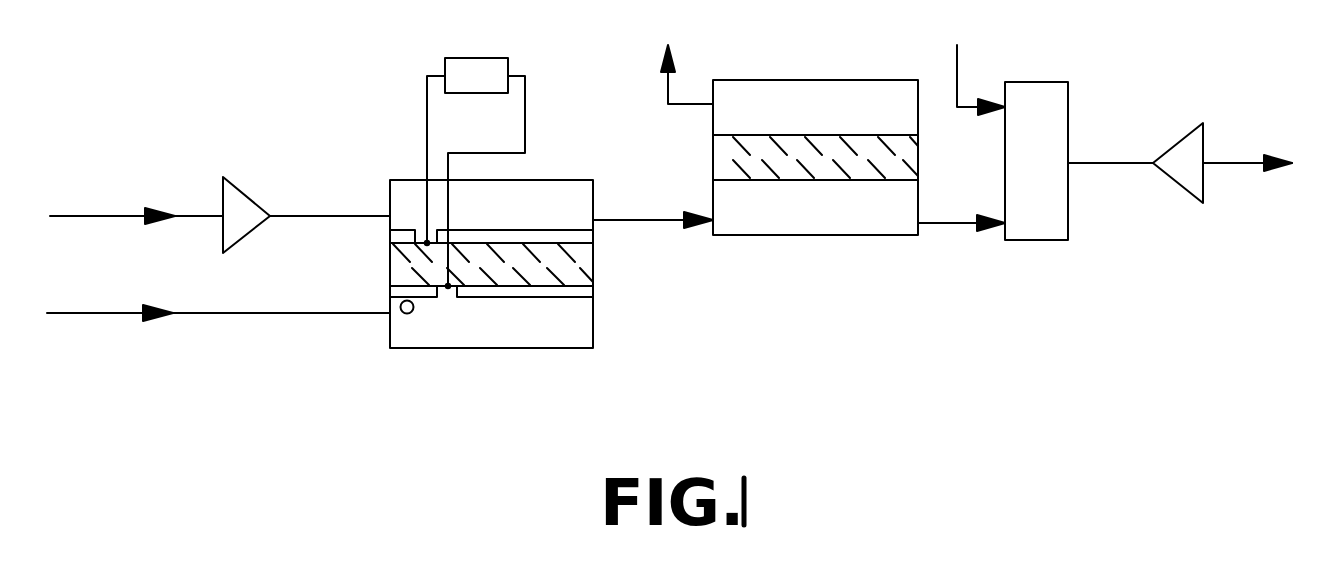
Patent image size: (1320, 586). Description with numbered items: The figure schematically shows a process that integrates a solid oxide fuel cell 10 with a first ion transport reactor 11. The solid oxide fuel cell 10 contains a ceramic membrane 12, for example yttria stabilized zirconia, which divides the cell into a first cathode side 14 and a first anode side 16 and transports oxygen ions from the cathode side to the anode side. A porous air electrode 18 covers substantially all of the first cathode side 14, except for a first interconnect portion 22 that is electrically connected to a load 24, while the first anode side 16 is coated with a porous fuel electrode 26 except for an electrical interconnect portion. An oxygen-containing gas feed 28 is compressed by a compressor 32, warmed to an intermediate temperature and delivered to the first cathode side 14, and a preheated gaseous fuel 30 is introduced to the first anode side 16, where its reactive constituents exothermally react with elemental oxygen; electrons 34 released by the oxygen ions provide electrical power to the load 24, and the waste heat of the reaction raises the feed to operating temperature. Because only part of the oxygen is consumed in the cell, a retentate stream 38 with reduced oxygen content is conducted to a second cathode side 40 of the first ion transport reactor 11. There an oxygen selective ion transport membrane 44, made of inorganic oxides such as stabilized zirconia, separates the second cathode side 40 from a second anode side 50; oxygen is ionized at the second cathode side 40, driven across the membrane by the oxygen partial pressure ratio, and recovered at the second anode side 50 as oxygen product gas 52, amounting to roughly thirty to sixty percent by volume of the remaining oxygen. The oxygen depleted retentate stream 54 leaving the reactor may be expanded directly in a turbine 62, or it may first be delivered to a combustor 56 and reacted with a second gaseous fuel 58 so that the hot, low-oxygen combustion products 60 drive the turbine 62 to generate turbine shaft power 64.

The solid oxide fuel cell 10 is at (494, 374).
The first ion transport reactor 11 is at (870, 278).
The ceramic membrane 12 is at (570, 267).
The first cathode side 14 is at (523, 242).
The first anode side 16 is at (548, 287).
The air electrode 18 is at (573, 238).
The first interconnect portion 22 is at (423, 243).
The load 24 is at (460, 72).
The fuel electrode 26 is at (400, 288).
The oxygen-containing gas feed 28 is at (98, 217).
The gaseous fuel 30 is at (80, 315).
The compressor 32 is at (243, 198).
The electrons 34 is at (403, 313).
The retentate stream 38 is at (625, 218).
The second cathode side 40 is at (778, 180).
The oxygen selective ion transport membrane 44 is at (893, 162).
The second anode side 50 is at (740, 135).
The oxygen product gas 52 is at (667, 102).
The oxygen depleted retentate stream 54 is at (967, 225).
The combustor 56 is at (1045, 218).
The second gaseous fuel 58 is at (955, 67).
The combustion products 60 is at (1087, 163).
The turbine 62 is at (1180, 172).
The turbine shaft power 64 is at (1237, 165).